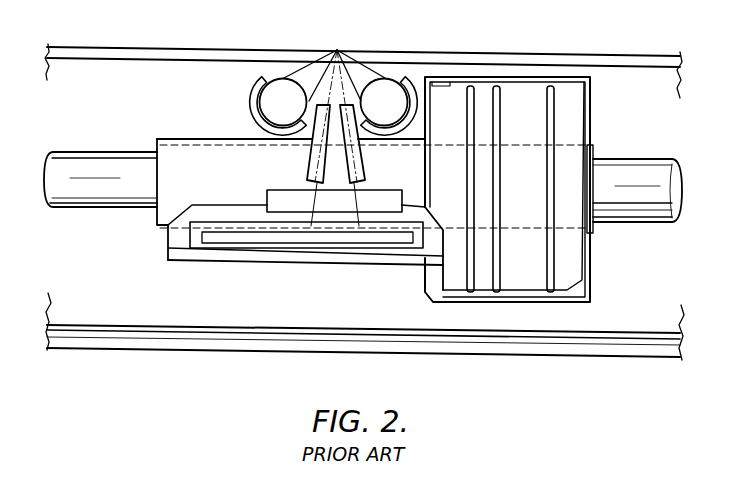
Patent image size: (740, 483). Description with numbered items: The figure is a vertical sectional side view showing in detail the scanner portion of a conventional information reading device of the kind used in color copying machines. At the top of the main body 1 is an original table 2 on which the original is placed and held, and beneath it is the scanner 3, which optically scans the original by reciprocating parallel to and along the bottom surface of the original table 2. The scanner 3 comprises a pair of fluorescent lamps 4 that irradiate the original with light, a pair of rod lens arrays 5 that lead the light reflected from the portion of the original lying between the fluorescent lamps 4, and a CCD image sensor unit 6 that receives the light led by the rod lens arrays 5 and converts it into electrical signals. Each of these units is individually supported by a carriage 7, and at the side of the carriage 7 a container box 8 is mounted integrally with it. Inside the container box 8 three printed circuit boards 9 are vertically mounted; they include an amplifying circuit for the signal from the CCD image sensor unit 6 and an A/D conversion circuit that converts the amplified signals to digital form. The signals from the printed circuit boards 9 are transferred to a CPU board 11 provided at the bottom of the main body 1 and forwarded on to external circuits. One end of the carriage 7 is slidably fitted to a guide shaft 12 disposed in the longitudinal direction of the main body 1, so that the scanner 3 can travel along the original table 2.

The main body 1 is at (338, 354).
The original table 2 is at (161, 48).
The scanner 3 is at (338, 264).
The fluorescent lamps 4 is at (285, 77).
The rod lens arrays 5 is at (310, 152).
The CCD image sensor unit 6 is at (277, 262).
The carriage 7 is at (173, 232).
The container box 8 is at (591, 117).
The printed circuit boards 9 is at (498, 84).
The CPU board 11 is at (170, 333).
The guide shaft 12 is at (88, 158).